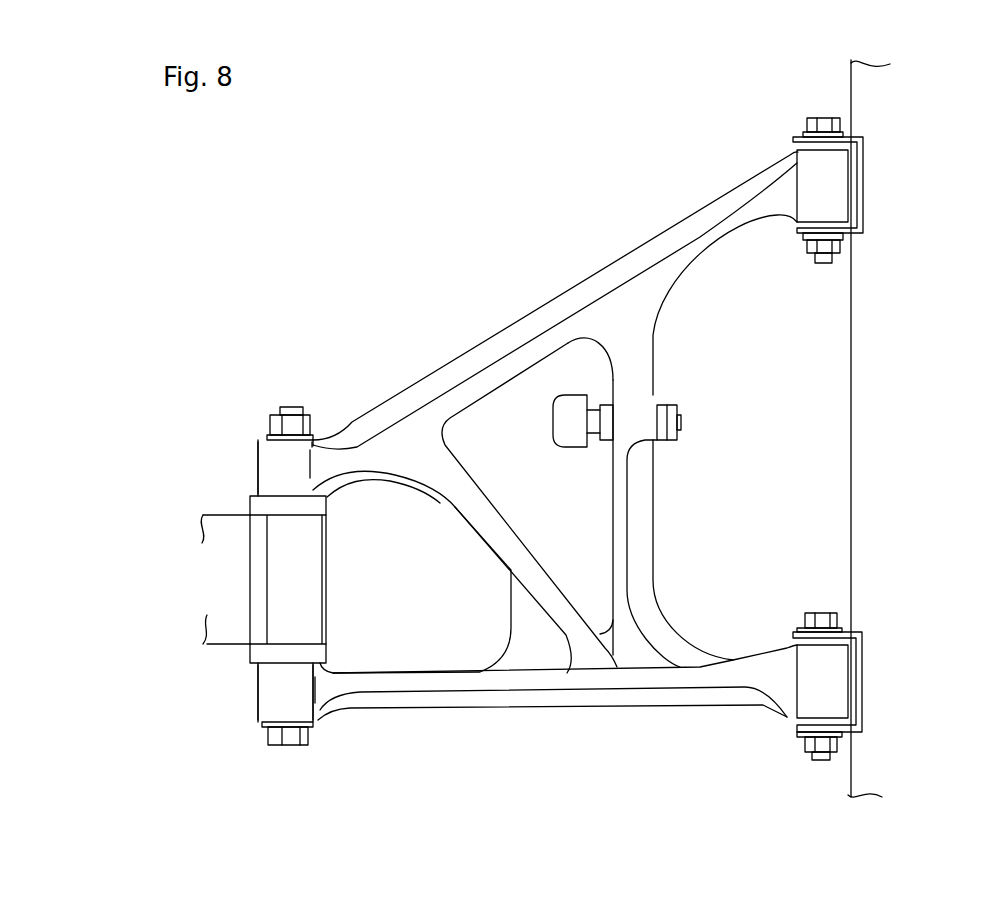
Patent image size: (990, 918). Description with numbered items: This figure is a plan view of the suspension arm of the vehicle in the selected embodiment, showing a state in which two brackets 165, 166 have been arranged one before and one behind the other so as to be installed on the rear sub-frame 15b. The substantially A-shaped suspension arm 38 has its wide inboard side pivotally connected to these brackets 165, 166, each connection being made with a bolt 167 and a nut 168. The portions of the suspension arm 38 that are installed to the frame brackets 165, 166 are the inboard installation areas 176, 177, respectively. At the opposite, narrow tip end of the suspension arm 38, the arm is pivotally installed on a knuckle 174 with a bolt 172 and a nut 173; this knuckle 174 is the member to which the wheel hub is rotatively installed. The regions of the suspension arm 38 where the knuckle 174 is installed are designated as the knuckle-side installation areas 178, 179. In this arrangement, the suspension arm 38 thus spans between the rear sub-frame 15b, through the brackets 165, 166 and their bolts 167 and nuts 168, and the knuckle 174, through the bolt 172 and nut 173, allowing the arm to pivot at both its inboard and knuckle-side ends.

The suspension arm 38 is at (485, 337).
The rear sub-frame 15b is at (851, 430).
The bracket 165 is at (866, 183).
The bracket 166 is at (863, 677).
The bolt 167 is at (828, 115).
The nut 168 is at (805, 240).
The bolt 172 is at (290, 747).
The nut 173 is at (268, 427).
The knuckle 174 is at (207, 506).
The inboard installation area 176 is at (824, 172).
The inboard installation area 177 is at (815, 676).
The knuckle-side installation area 178 is at (289, 461).
The knuckle-side installation area 179 is at (289, 687).